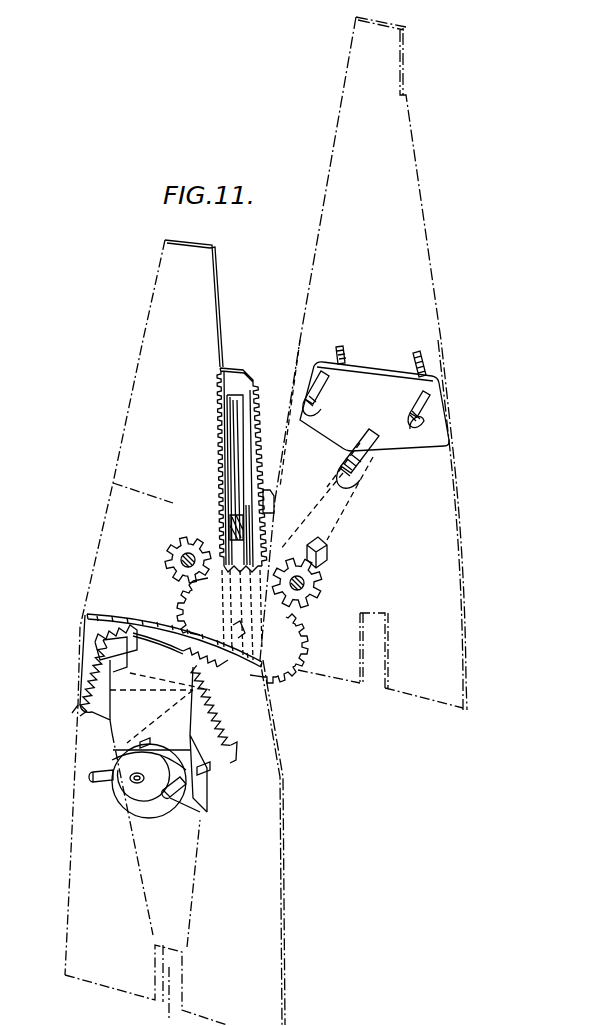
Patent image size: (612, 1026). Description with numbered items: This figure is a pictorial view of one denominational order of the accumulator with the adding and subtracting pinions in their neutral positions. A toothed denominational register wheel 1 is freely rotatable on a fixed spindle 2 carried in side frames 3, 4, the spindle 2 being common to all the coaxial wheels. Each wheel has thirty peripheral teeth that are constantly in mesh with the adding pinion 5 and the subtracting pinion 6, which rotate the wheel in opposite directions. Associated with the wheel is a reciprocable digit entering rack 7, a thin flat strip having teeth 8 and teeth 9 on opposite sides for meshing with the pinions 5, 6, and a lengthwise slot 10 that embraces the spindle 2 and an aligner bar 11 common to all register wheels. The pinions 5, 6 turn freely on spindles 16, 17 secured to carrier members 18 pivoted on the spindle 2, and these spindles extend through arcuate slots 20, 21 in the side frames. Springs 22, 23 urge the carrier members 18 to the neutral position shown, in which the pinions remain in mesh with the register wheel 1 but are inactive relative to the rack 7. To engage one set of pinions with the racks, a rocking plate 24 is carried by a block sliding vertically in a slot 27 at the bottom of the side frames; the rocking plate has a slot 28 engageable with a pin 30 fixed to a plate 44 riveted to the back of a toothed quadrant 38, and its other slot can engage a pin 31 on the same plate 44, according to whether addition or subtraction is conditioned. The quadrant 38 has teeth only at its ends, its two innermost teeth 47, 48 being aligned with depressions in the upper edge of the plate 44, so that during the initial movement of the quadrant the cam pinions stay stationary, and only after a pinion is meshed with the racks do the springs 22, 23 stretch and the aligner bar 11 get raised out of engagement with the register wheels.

The denominational register wheel 1 is at (202, 601).
The fixed spindle 2 is at (127, 783).
The side frame 3 is at (420, 355).
The side frame 4 is at (98, 837).
The adding pinion 5 is at (170, 548).
The subtracting pinion 6 is at (322, 570).
The digit entering rack 7 is at (222, 455).
The rack teeth 8 is at (222, 520).
The rack teeth 9 is at (262, 528).
The slot 10 is at (236, 410).
The aligner bar 11 is at (270, 503).
The spindle 16 is at (175, 560).
The spindle 17 is at (306, 587).
The carrier member 18 is at (435, 412).
The arcuate slot 20 is at (102, 662).
The arcuate slot 21 is at (250, 683).
The spring 22 is at (93, 688).
The spring 23 is at (250, 730).
The rocking plate 24 is at (168, 858).
The slot 27 is at (372, 654).
The slot 28 is at (170, 787).
The pin 30 is at (97, 774).
The pin 31 is at (163, 790).
The toothed quadrant 38 is at (128, 725).
The plate 44 is at (140, 742).
The tooth 47 is at (190, 650).
The tooth 48 is at (105, 625).